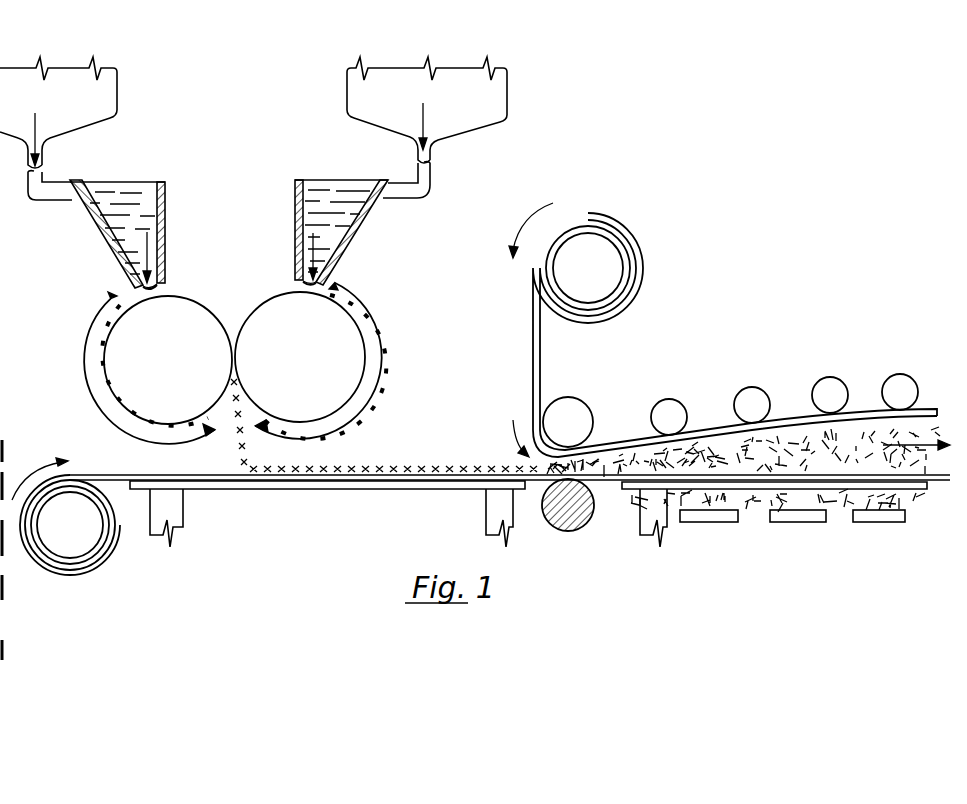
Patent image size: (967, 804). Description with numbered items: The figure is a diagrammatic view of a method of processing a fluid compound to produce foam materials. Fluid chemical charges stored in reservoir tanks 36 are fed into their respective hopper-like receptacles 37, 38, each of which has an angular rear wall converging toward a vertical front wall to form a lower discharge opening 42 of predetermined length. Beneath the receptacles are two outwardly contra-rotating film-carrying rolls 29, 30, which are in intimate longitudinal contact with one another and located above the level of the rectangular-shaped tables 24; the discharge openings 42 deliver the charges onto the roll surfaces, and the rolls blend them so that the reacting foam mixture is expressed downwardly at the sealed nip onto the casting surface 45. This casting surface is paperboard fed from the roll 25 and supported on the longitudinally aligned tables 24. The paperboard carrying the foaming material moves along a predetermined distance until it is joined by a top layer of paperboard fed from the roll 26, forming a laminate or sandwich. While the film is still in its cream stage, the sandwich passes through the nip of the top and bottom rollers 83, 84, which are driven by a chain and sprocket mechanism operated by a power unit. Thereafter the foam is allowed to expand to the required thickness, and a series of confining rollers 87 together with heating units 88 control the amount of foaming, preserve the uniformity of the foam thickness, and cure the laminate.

The reservoir tanks 36 is at (253, 128).
The receptacle 37 is at (128, 193).
The receptacle 38 is at (318, 185).
The lower discharge opening 42 is at (161, 281).
The contra-rotating film-carrying roll 29 is at (158, 368).
The contra-rotating film-carrying roll 30 is at (310, 361).
The roll of paperboard 25 is at (66, 516).
The casting surface 45 is at (128, 478).
The rectangular-shaped tables 24 is at (320, 490).
The roll of paperboard 26 is at (723, 330).
The top roller 83 is at (577, 421).
The bottom roller 84 is at (583, 521).
The confining rollers 87 is at (829, 389).
The heating units 88 is at (865, 516).